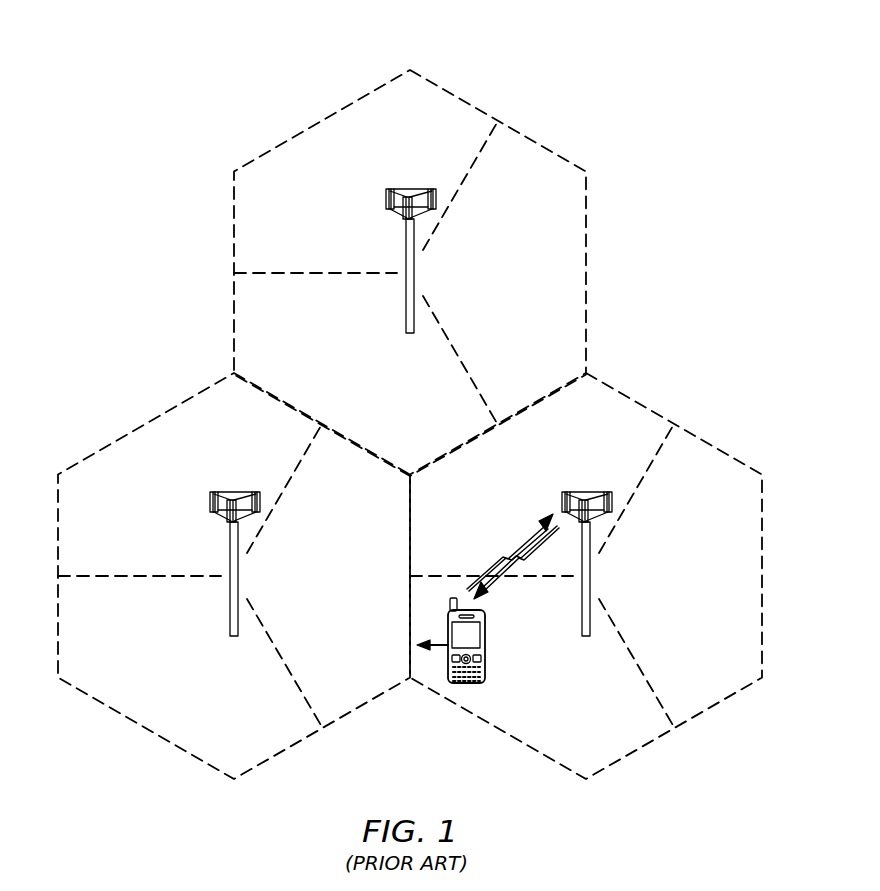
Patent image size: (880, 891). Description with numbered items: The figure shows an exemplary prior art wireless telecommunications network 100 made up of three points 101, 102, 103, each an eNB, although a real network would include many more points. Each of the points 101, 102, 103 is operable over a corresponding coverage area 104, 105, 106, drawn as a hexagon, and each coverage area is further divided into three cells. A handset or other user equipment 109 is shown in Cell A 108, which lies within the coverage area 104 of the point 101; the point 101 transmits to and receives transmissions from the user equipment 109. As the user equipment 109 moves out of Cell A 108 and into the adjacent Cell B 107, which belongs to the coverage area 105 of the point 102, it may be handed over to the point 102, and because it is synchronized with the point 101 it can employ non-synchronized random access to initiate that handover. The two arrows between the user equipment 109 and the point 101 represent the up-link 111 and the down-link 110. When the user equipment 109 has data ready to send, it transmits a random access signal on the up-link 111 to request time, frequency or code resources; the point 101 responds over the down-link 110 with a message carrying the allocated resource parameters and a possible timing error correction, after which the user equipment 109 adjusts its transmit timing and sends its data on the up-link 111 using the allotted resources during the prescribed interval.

The wireless telecommunications network 100 is at (231, 56).
The point 101 is at (590, 577).
The point 102 is at (230, 600).
The point 103 is at (406, 298).
The coverage area 104 is at (705, 712).
The coverage area 105 is at (148, 730).
The coverage area 106 is at (587, 272).
The Cell B 107 is at (370, 676).
The Cell A 108 is at (592, 738).
The user equipment (UE) 109 is at (485, 660).
The down-link 110 is at (494, 589).
The up-link 111 is at (529, 539).